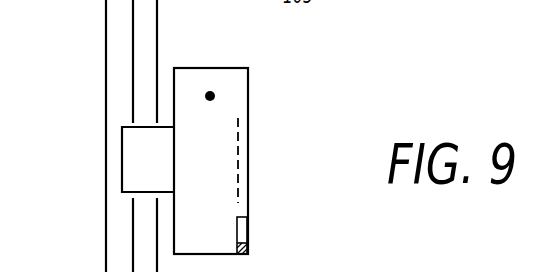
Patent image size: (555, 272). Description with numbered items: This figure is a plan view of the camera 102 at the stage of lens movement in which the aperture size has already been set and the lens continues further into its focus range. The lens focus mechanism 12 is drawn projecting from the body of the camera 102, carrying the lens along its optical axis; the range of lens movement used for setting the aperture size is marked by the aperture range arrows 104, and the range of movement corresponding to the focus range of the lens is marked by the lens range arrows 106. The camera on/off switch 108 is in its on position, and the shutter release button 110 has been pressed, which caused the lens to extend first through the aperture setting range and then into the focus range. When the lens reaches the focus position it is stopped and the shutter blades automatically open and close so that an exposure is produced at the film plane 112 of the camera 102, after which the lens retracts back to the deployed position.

The lens focus mechanism 12 is at (122, 147).
The camera 102 is at (230, 68).
The aperture range arrows 104 is at (158, 27).
The lens range arrows 106 is at (65, 136).
The camera on/off switch 108 is at (248, 252).
The shutter release button 110 is at (210, 96).
The film plane 112 is at (239, 172).